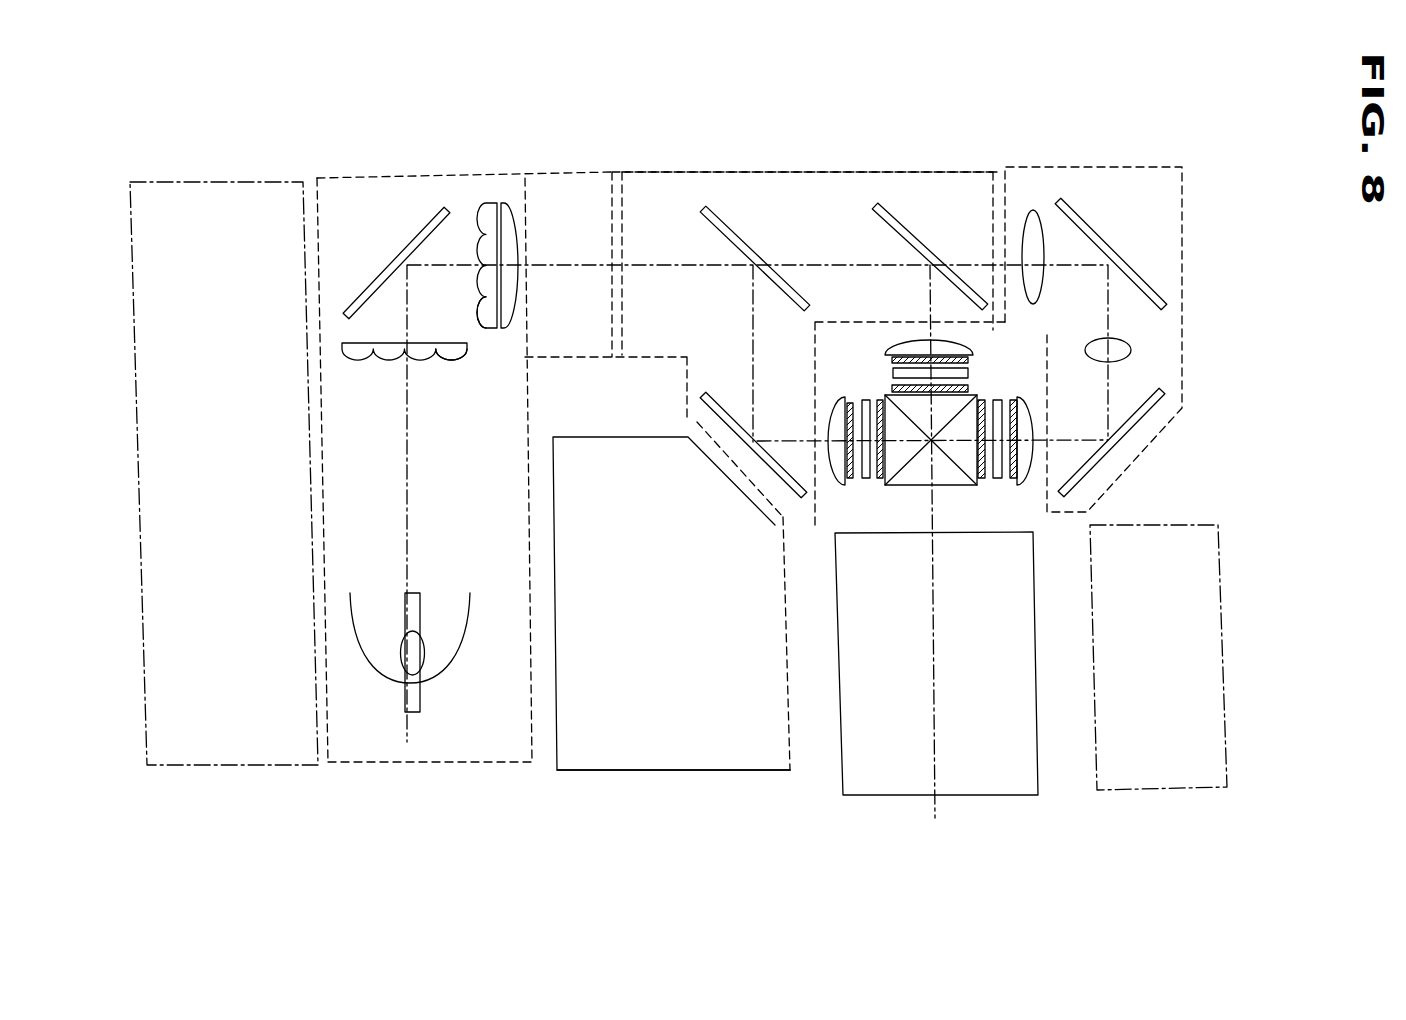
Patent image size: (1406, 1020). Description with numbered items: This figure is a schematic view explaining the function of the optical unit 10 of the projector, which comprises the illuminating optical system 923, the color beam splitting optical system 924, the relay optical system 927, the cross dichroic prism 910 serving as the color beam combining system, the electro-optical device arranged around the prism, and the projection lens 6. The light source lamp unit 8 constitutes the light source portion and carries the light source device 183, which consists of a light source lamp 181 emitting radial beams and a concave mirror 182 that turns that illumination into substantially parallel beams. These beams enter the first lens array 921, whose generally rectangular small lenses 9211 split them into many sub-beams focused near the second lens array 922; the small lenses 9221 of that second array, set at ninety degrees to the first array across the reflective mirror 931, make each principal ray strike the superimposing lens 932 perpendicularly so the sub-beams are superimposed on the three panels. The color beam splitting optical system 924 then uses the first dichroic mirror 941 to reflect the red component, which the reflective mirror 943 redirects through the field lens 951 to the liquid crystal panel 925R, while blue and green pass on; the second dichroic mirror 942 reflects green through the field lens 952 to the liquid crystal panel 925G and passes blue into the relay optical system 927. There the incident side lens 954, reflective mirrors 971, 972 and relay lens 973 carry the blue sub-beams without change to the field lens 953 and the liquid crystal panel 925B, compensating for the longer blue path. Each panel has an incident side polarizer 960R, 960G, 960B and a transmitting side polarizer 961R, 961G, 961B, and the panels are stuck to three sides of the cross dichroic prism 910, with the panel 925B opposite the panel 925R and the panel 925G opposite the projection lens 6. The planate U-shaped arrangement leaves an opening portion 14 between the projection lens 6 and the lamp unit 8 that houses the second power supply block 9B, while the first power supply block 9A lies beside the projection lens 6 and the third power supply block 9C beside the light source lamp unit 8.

The optical unit 10 is at (865, 92).
The projection lens 6 is at (1015, 630).
The light source lamp unit 8 is at (382, 725).
The opening portion 14 is at (622, 720).
The light source lamp 181 is at (417, 615).
The concave mirror 182 is at (460, 640).
The light source device 183 is at (431, 597).
The first lens array 921 is at (360, 352).
The small lenses 9211 is at (453, 353).
The second lens array 922 is at (480, 205).
The small lenses 9221 is at (483, 308).
The illuminating optical system 923 is at (318, 695).
The color beam splitting optical system 924 is at (803, 170).
The relay optical system 927 is at (1182, 225).
The reflective mirror 931 is at (413, 233).
The superimposing lens 932 is at (511, 205).
The first dichroic mirror 941 is at (712, 205).
The second dichroic mirror 942 is at (888, 202).
The reflective mirror 943 is at (703, 393).
The field lens 951 is at (840, 400).
The field lens 952 is at (908, 338).
The field lens 953 is at (1035, 455).
The incident side lens 954 is at (1033, 208).
The reflective mirror 971 is at (1165, 296).
The reflective mirror 972 is at (1160, 408).
The relay lens 973 is at (1130, 350).
The incident side polarizer 960R is at (850, 402).
The incident side polarizer 960G is at (977, 355).
The incident side polarizer 960B is at (1013, 487).
The liquid crystal panel 925R is at (845, 478).
The liquid crystal panel 925G is at (970, 373).
The liquid crystal panel 925B is at (1000, 482).
The transmitting side polarizer 961R is at (878, 483).
The transmitting side polarizer 961G is at (975, 388).
The transmitting side polarizer 961B is at (935, 487).
The cross dichroic prism 910 is at (910, 486).
The first power supply block 9A is at (1128, 790).
The second power supply block 9B is at (700, 770).
The third power supply block 9C is at (198, 765).